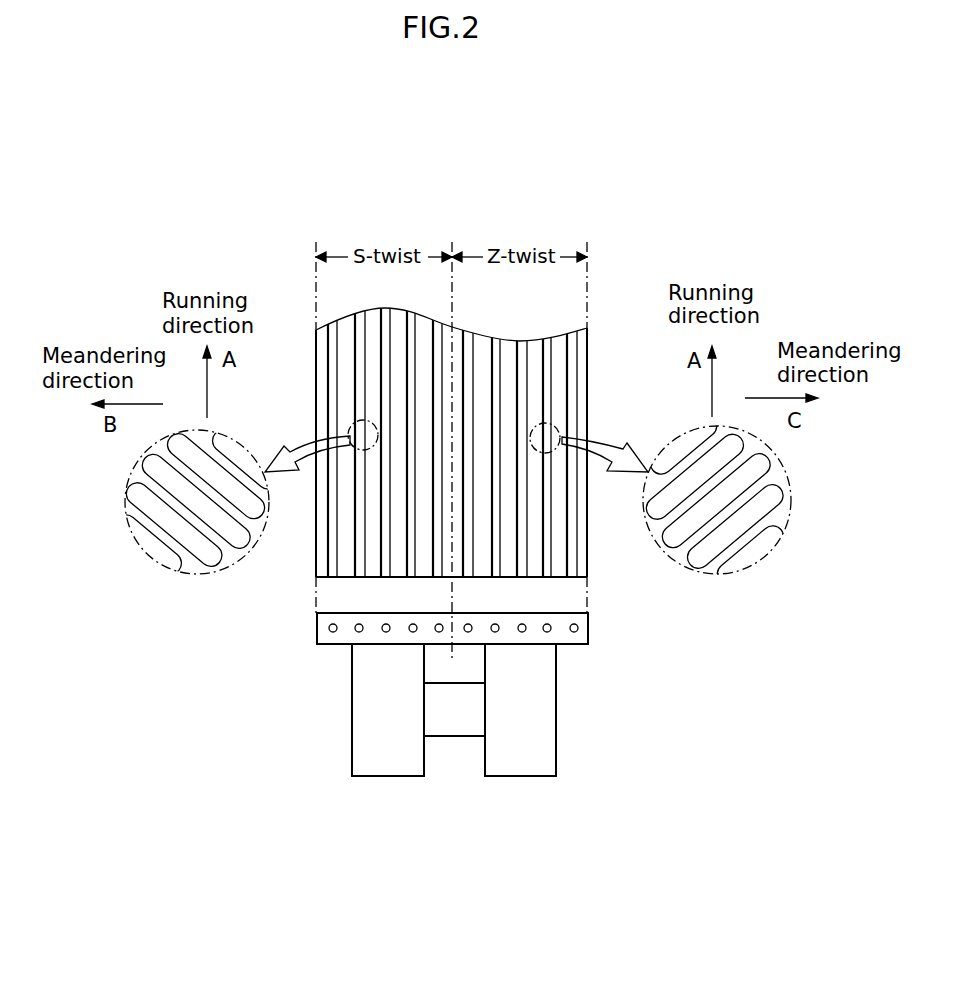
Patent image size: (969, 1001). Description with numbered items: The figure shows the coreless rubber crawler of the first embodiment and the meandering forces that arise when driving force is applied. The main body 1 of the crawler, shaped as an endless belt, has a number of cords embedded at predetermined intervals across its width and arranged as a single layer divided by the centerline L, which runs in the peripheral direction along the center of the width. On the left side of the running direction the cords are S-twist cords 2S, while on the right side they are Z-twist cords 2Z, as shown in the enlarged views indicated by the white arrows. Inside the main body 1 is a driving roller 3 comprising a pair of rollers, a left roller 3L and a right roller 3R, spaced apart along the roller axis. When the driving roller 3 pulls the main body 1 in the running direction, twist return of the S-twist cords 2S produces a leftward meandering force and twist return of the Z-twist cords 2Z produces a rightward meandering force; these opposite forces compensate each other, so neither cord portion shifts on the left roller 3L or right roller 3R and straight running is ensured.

The main body 1 is at (456, 468).
The S-twist cords 2S is at (360, 523).
The Z-twist cords 2Z is at (548, 547).
The driving roller 3 is at (407, 743).
The left roller 3L is at (379, 768).
The right roller 3R is at (523, 768).
The centerline L is at (454, 295).